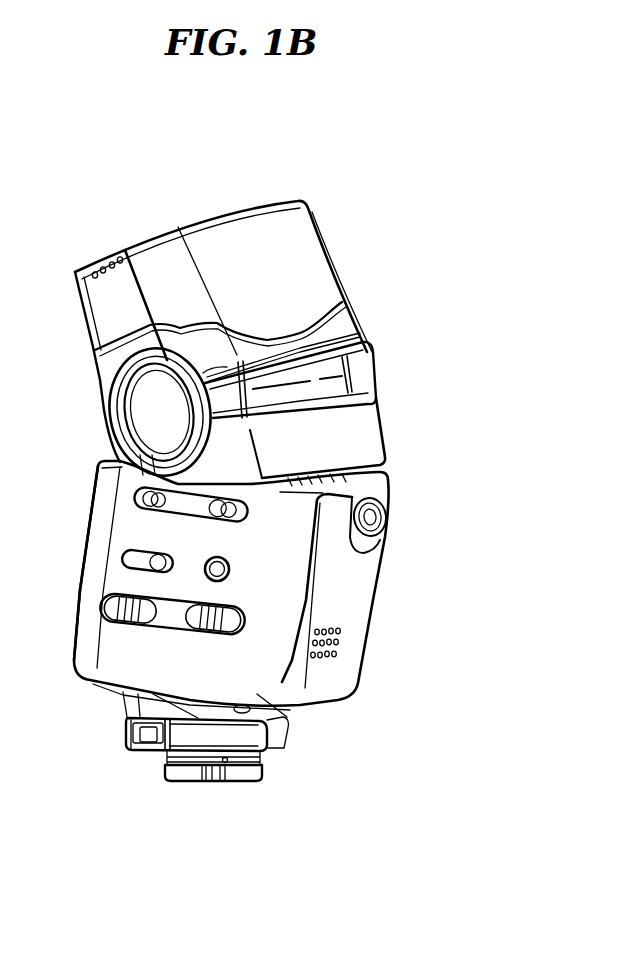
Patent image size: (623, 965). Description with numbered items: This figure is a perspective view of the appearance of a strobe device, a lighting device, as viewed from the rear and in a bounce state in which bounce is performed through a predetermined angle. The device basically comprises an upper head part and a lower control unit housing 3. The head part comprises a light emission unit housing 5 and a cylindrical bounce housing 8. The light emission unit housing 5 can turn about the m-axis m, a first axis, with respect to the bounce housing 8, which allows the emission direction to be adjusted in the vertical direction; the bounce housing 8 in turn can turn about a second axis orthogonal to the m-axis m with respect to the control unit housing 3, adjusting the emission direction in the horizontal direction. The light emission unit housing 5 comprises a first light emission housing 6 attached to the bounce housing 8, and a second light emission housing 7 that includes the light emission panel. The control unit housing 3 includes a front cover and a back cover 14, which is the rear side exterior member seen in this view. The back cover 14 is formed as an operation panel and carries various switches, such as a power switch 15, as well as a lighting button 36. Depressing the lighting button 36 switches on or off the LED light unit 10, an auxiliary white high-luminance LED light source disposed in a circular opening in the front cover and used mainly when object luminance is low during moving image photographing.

The LED light unit 10 is at (0, 93).
The light emission unit housing 5 is at (345, 265).
The second light emission housing 7 is at (296, 250).
The first light emission housing 6 is at (348, 320).
The bounce housing 8 is at (350, 390).
The control unit housing 3 is at (376, 645).
The back cover 14 is at (92, 594).
The power switch 15 is at (115, 608).
The lighting button 36 is at (224, 580).
The m-axis m is at (153, 408).